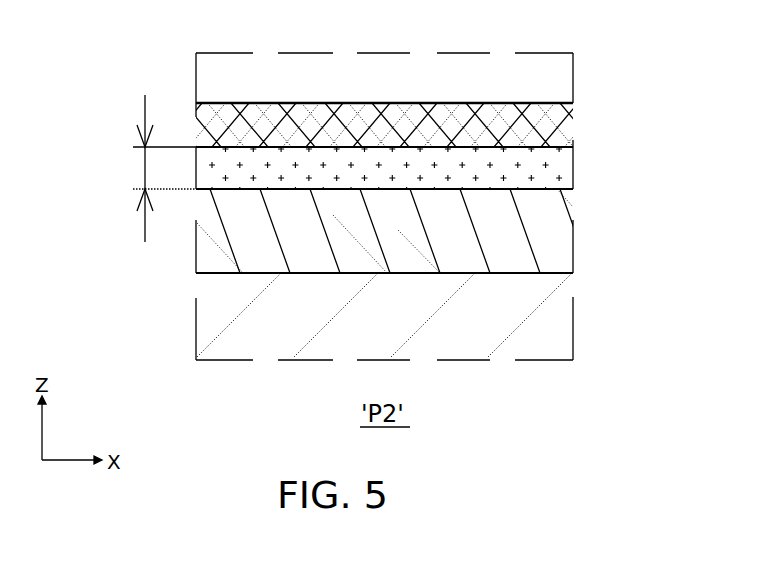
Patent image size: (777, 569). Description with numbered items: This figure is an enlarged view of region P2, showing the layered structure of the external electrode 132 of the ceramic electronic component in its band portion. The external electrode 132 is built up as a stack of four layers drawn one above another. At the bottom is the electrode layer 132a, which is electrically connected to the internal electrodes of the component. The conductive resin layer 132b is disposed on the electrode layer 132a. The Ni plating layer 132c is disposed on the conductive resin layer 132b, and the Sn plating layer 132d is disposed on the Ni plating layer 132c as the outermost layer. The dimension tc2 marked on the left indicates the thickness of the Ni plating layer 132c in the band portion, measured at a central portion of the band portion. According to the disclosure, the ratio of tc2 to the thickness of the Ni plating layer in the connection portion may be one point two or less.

The external electrode 132 is at (440, 231).
The electrode layer 132a is at (436, 316).
The conductive resin layer 132b is at (565, 231).
The Ni plating layer 132c is at (563, 168).
The Sn plating layer 132d is at (563, 122).
The thickness of the Ni plating layer in the band portion tc2 is at (148, 168).